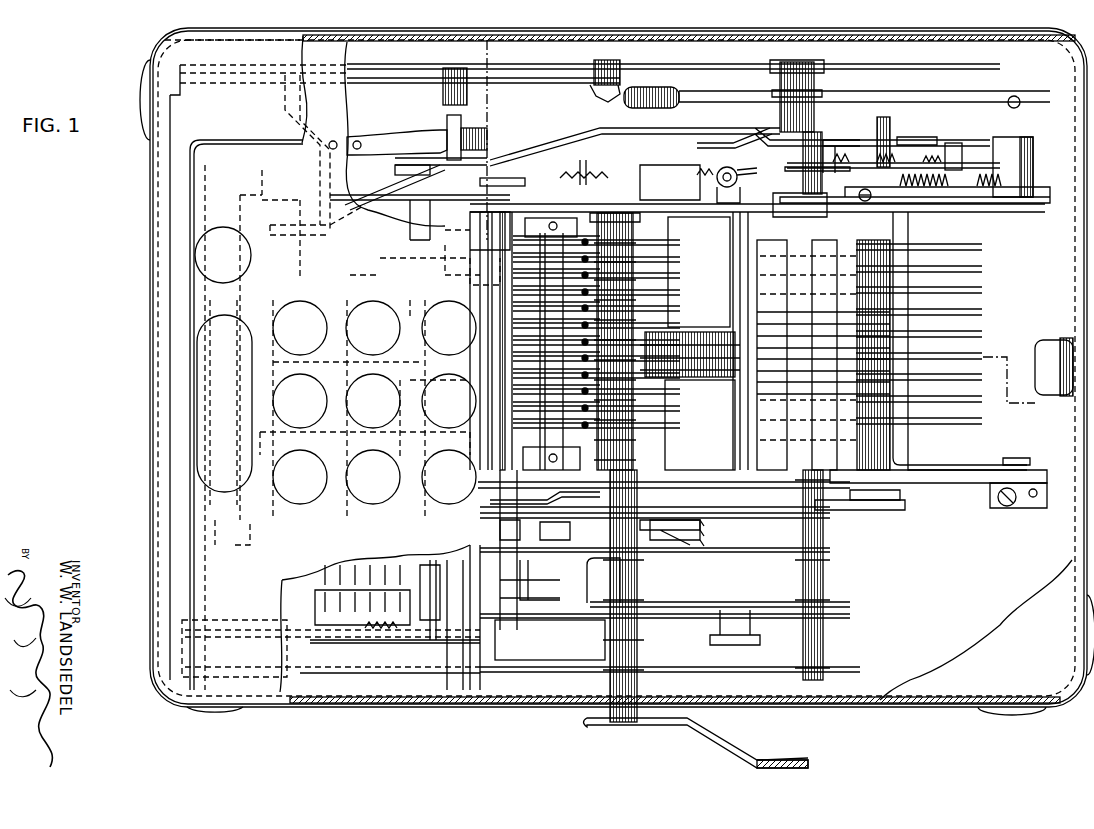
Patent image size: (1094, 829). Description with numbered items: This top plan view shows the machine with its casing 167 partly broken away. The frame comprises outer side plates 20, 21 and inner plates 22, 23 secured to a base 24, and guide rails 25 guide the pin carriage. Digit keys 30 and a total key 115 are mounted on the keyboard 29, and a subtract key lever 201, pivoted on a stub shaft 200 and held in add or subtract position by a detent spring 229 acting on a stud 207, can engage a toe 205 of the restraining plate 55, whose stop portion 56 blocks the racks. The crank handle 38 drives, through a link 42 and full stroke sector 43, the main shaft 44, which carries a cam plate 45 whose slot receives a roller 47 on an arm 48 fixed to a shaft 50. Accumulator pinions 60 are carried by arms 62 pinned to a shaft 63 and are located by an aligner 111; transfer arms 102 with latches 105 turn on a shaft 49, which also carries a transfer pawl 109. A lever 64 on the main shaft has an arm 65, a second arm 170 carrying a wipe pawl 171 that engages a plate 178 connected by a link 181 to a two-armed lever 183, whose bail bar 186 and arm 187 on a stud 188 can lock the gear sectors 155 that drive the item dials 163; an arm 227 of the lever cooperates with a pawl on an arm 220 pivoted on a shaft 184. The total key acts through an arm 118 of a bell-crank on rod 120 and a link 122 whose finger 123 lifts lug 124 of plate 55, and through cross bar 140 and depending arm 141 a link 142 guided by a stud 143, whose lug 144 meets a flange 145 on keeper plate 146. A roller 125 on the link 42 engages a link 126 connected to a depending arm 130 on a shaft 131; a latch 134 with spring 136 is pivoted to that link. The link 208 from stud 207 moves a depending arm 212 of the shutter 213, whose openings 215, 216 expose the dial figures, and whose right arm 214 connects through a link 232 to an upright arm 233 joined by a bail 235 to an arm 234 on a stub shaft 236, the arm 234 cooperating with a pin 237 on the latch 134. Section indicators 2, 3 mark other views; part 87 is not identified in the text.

The section line 2 is at (120, 308).
The section line 3 is at (134, 645).
The outer side plate 20 is at (688, 63).
The outer side plate 21 is at (768, 670).
The inner plate 22 is at (990, 200).
The inner plate 23 is at (978, 487).
The base 24 is at (617, 371).
The guide rails 25 is at (458, 560).
The keyboard 29 is at (247, 514).
The digit keys 30 is at (372, 500).
The crank handle 38 is at (740, 743).
The link 42 is at (698, 612).
The full stroke sector 43 is at (848, 598).
The main shaft 44 is at (840, 560).
The cam plate 45 is at (885, 508).
The roller 47 is at (712, 533).
The arm 48 is at (712, 482).
The shaft 49 is at (490, 450).
The shaft 50 is at (740, 332).
The restraining plate 55 is at (365, 443).
The stop portion 56 is at (315, 358).
The ten-toothed pinions 60 is at (680, 370).
The arms 62 is at (660, 445).
The shaft 63 is at (555, 195).
The lever 64 is at (754, 127).
The forwardly extending arm 65 is at (725, 144).
The lever 87 is at (673, 533).
The transfer pawl 102 is at (496, 372).
The latch 105 is at (650, 270).
The transfer pawl 109 is at (528, 440).
The aligner 111 is at (700, 343).
The total key 115 is at (232, 275).
The arm 118 is at (258, 193).
The rod 120 is at (270, 172).
The link 122 is at (420, 140).
The finger 123 is at (396, 292).
The upturned lug 124 is at (435, 380).
The roller 125 is at (730, 627).
The forwardly extending link 126 is at (350, 642).
The depending arm 130 is at (172, 675).
The shaft 131 is at (246, 524).
The latch 134 is at (345, 615).
The spring 136 is at (374, 633).
The cross bar 140 is at (307, 152).
The depending arm 141 is at (245, 76).
The rearwardly extending link 142 is at (502, 80).
The stud 143 is at (594, 68).
The lug 144 is at (600, 99).
The flange 145 is at (680, 90).
The keeper plate 146 is at (775, 100).
The gear sector 155 is at (965, 285).
The item dial 163 is at (903, 290).
The casing 167 is at (418, 700).
The second arm 170 is at (905, 137).
The wipe pawl 171 is at (952, 143).
The plate 178 is at (993, 150).
The rearwardly extending link 181 is at (990, 158).
The two-armed lever 183 is at (960, 200).
The shaft 184 is at (1009, 213).
The bail bar 186 is at (898, 440).
The arm 187 is at (930, 470).
The stud 188 is at (1020, 455).
The stub shaft 200 is at (487, 181).
The subtract key lever 201 is at (370, 240).
The toe 205 is at (297, 212).
The stud 207 is at (447, 120).
The rearwardly extending link 208 is at (642, 132).
The depending arm 212 is at (858, 190).
The dial shield or shutter 213 is at (823, 344).
The arm 214 is at (872, 492).
The elongated slot 215 is at (778, 420).
The elongated slot 216 is at (832, 420).
The forwardly extending arm 220 is at (886, 118).
The arm 227 is at (866, 140).
The detent spring 229 is at (392, 164).
The forwardly extending link 232 is at (750, 550).
The upright arm 233 is at (534, 574).
The arm 234 is at (432, 620).
The bail 235 is at (536, 586).
The stub shaft 236 is at (534, 600).
The pin 237 is at (434, 560).